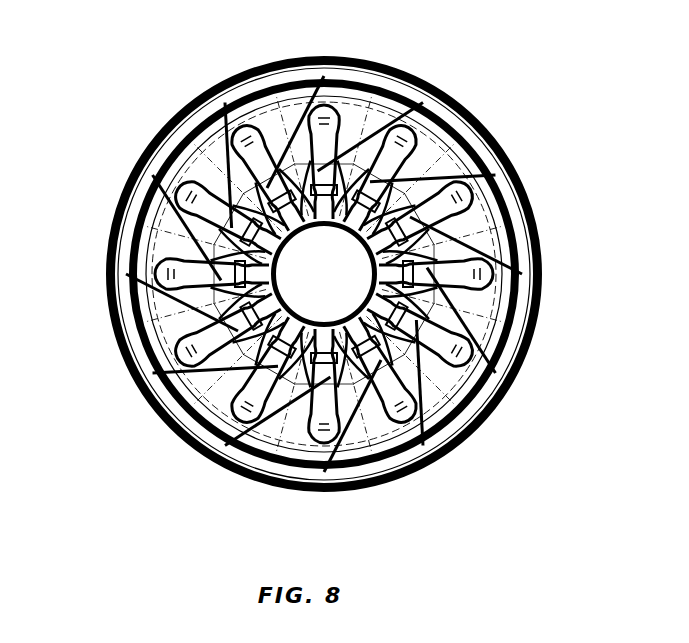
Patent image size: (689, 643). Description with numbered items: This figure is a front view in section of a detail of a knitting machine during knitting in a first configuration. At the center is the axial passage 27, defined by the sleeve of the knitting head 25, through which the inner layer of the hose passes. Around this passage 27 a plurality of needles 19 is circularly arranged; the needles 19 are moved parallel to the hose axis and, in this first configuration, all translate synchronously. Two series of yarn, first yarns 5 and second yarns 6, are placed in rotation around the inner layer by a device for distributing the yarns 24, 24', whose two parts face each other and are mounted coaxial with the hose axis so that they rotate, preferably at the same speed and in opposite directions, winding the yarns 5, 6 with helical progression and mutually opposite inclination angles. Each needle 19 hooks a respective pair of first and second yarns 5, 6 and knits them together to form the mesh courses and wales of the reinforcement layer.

The first yarns 5 is at (468, 437).
The second yarns 6 is at (524, 328).
The needles 19 is at (327, 108).
The yarn distributing device 24 is at (324, 253).
The yarn distributing device 24' is at (324, 258).
The knitting head 25 is at (118, 112).
The axial passage 27 is at (337, 288).